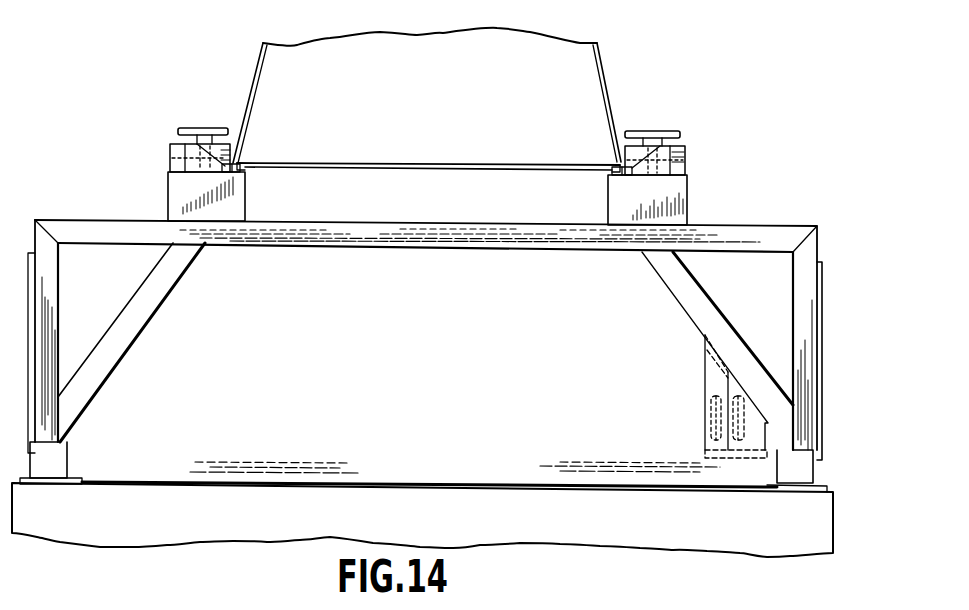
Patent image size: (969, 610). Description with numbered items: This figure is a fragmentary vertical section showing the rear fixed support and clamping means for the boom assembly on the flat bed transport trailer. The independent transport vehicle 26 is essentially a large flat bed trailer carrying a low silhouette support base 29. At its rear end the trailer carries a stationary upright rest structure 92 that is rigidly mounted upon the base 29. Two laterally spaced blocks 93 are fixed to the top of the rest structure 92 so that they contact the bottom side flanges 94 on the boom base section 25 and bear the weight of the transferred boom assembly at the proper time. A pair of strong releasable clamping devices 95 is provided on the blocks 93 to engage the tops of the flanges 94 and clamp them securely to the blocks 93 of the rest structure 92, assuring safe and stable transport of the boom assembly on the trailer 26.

The base section 25 is at (611, 88).
The transport vehicle 26 is at (764, 546).
The support base 29 is at (54, 458).
The rest structure 92 is at (806, 268).
The blocks 93 is at (176, 189).
The bottom side flanges 94 is at (241, 181).
The releasable clamping devices 95 is at (172, 151).